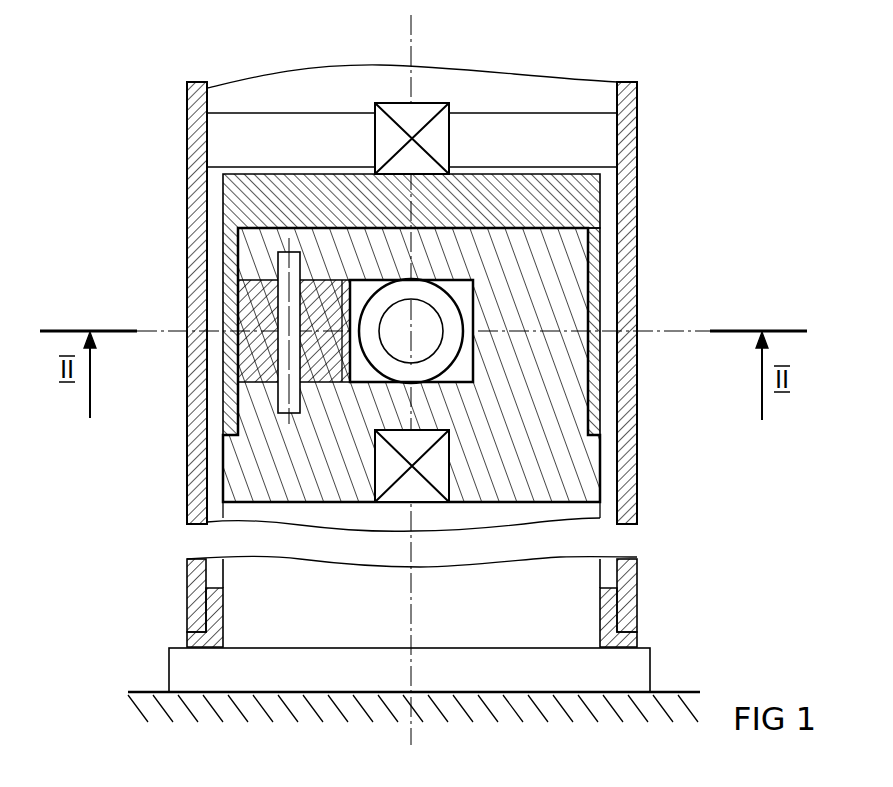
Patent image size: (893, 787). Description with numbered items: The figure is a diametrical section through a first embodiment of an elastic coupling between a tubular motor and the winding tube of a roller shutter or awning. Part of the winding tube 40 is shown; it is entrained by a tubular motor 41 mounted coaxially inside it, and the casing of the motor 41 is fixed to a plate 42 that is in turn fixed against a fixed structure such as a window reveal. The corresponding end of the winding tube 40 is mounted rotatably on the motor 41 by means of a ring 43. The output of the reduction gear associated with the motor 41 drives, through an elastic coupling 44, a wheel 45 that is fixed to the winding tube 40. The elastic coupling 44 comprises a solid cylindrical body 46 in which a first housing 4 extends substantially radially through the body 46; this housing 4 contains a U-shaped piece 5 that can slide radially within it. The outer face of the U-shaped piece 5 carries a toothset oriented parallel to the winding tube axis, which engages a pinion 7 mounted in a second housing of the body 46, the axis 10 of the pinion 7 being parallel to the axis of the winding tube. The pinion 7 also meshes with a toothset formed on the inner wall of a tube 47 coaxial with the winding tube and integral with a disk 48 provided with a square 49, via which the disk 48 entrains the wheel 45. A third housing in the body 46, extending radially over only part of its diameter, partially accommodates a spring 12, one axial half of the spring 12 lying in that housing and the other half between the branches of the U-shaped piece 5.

The first housing 4 is at (462, 293).
The U-shaped piece 5 is at (305, 222).
The pinion 7 is at (265, 283).
The axis 10 is at (287, 343).
The spring 12 is at (397, 368).
The winding tube 40 is at (193, 580).
The tubular motor 41 is at (560, 585).
The plate 42 is at (187, 665).
The ring 43 is at (612, 600).
The elastic coupling 44 is at (210, 404).
The wheel 45 is at (553, 140).
The solid cylindrical body 46 is at (577, 477).
The tube 47 is at (595, 302).
The disk 48 is at (573, 205).
The square 49 is at (438, 133).